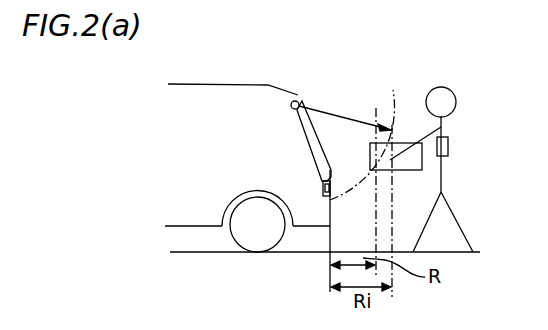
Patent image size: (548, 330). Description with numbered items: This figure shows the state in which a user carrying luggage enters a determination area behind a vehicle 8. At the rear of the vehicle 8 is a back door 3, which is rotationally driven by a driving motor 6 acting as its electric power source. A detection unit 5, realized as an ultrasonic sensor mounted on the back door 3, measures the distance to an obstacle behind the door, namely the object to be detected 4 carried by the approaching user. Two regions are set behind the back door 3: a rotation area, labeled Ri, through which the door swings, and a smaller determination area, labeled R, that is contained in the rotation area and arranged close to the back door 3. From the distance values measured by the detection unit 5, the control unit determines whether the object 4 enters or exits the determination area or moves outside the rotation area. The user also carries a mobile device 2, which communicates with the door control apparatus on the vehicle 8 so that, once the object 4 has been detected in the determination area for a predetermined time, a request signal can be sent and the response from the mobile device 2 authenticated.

The mobile device 2 is at (449, 146).
The back door 3 is at (309, 142).
The object to be detected 4 is at (418, 167).
The detection unit 5 is at (322, 184).
The driving motor 6 is at (291, 105).
The vehicle 8 is at (192, 93).